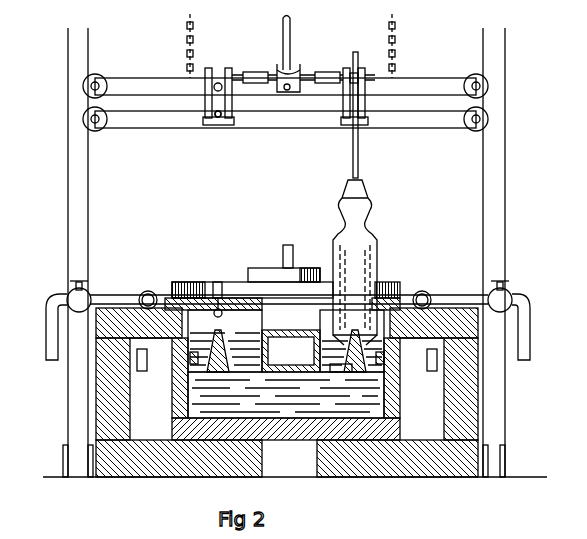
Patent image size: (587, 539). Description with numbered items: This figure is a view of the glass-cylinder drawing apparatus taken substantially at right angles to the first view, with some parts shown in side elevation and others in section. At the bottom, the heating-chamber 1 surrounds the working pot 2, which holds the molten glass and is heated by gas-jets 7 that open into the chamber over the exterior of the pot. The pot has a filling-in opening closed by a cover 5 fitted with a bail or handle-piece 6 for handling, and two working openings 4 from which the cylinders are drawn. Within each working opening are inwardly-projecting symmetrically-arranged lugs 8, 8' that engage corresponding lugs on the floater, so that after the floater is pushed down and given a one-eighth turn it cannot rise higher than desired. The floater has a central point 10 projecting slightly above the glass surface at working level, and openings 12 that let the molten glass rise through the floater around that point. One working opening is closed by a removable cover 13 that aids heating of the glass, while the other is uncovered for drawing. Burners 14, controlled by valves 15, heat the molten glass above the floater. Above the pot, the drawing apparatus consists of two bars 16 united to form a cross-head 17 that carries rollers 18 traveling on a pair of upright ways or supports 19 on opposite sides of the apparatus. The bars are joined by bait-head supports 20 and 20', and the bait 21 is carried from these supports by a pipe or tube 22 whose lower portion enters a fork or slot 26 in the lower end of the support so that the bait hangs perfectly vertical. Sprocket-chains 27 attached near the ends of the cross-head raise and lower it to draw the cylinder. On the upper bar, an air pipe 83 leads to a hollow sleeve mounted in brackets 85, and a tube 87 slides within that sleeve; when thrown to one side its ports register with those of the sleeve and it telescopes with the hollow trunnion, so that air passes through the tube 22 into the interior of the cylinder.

The heating-chamber 1 is at (287, 392).
The working pot 2 is at (286, 395).
The working openings 4 is at (286, 341).
The cover 5 is at (284, 267).
The bail or handle-piece 6 is at (295, 251).
The gas-jets 7 is at (137, 358).
The lugs 8 is at (394, 365).
The mold insert 8' is at (174, 357).
The central portion or point 10 is at (393, 291).
The openings 12 is at (340, 370).
The cover 13 is at (282, 296).
The burners 14 is at (221, 306).
The valves 15 is at (74, 292).
The bars 16 is at (285, 101).
The cross-head 17 is at (303, 117).
The rollers 18 is at (86, 112).
The upright ways or supports 19 is at (286, 248).
The bait-head supports 20 is at (371, 112).
The left-hand bait-support 20' is at (229, 114).
The bait 21 is at (364, 186).
The pipe or tube 22 is at (340, 115).
The fork or slot 26 is at (213, 121).
The sprocket-chains 27 is at (303, 42).
The pipe 83 is at (301, 43).
The brackets 85 is at (282, 72).
The tube 87 is at (312, 77).